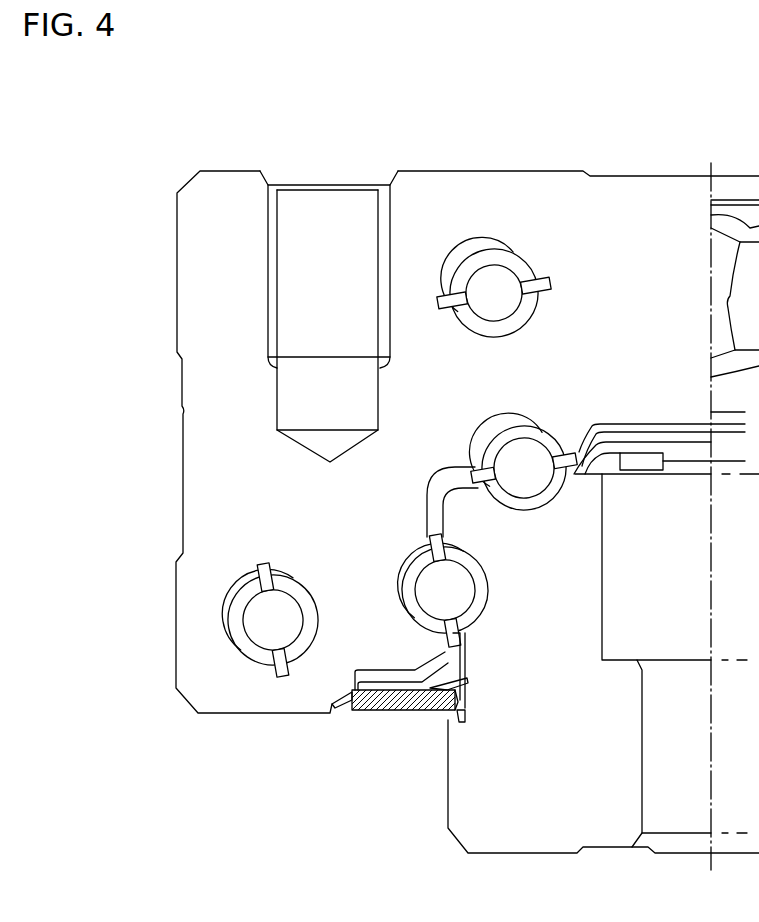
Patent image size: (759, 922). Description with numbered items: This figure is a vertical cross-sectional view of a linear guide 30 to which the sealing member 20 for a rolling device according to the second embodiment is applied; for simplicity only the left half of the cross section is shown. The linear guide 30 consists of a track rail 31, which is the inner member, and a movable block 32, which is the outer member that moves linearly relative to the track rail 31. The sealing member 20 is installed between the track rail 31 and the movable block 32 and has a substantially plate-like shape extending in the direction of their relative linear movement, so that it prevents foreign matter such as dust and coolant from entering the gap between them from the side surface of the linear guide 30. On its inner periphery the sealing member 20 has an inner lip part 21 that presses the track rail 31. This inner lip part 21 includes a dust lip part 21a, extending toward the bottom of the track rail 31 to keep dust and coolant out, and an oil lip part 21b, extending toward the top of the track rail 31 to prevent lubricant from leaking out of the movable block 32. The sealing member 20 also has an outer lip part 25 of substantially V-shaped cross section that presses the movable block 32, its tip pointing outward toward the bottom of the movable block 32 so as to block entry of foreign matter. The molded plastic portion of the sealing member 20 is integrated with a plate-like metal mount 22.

The sealing member for a rolling device 20 is at (395, 720).
The inner lip part 21 is at (447, 718).
The dust lip part 21a is at (460, 720).
The oil lip part 21b is at (466, 680).
The metal mount 22 is at (370, 707).
The outer lip part 25 is at (342, 710).
The linear guide 30 is at (290, 150).
The track rail 31 is at (540, 832).
The movable block 32 is at (200, 408).